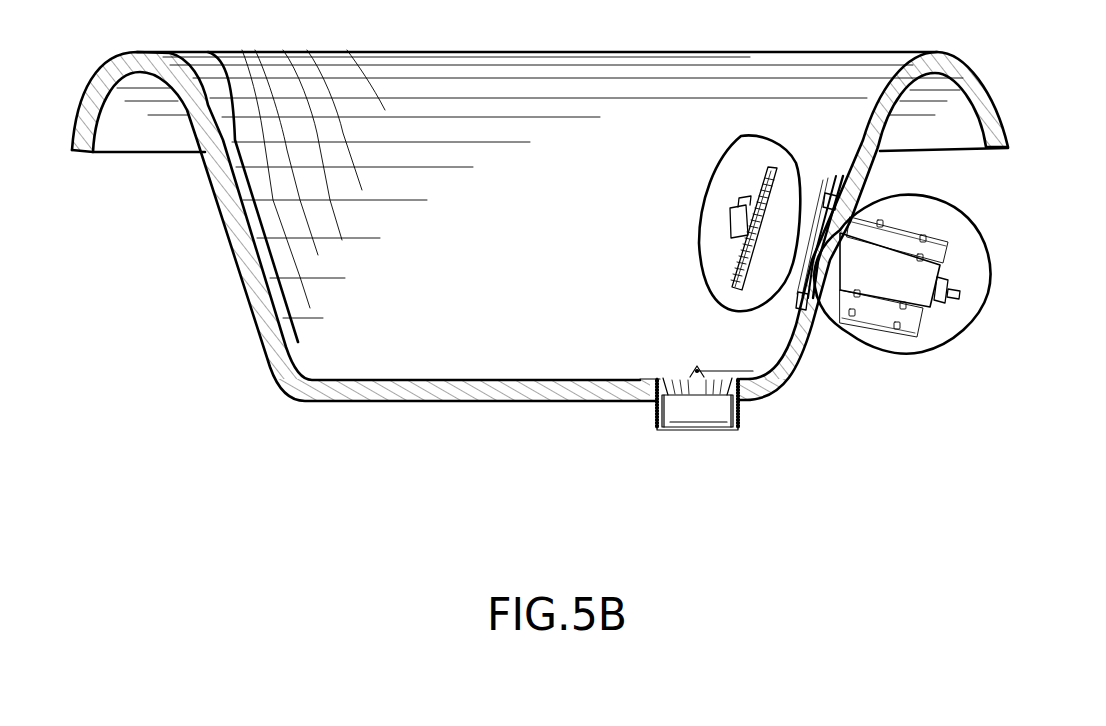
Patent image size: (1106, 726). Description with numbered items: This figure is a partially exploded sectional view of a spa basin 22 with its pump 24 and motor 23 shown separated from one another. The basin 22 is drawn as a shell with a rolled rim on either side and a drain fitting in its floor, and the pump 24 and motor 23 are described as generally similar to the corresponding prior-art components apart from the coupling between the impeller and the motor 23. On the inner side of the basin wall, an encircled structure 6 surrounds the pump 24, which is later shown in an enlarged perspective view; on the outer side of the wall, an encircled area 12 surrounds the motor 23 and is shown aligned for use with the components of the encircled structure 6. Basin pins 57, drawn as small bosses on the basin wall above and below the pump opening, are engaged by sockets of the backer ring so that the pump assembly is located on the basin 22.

The encircled structure 6 is at (717, 204).
The encircled area 12 is at (942, 307).
The basin 22 is at (247, 253).
The motor 23 is at (880, 315).
The pump 24 is at (727, 280).
The basin pins 57 is at (828, 196).